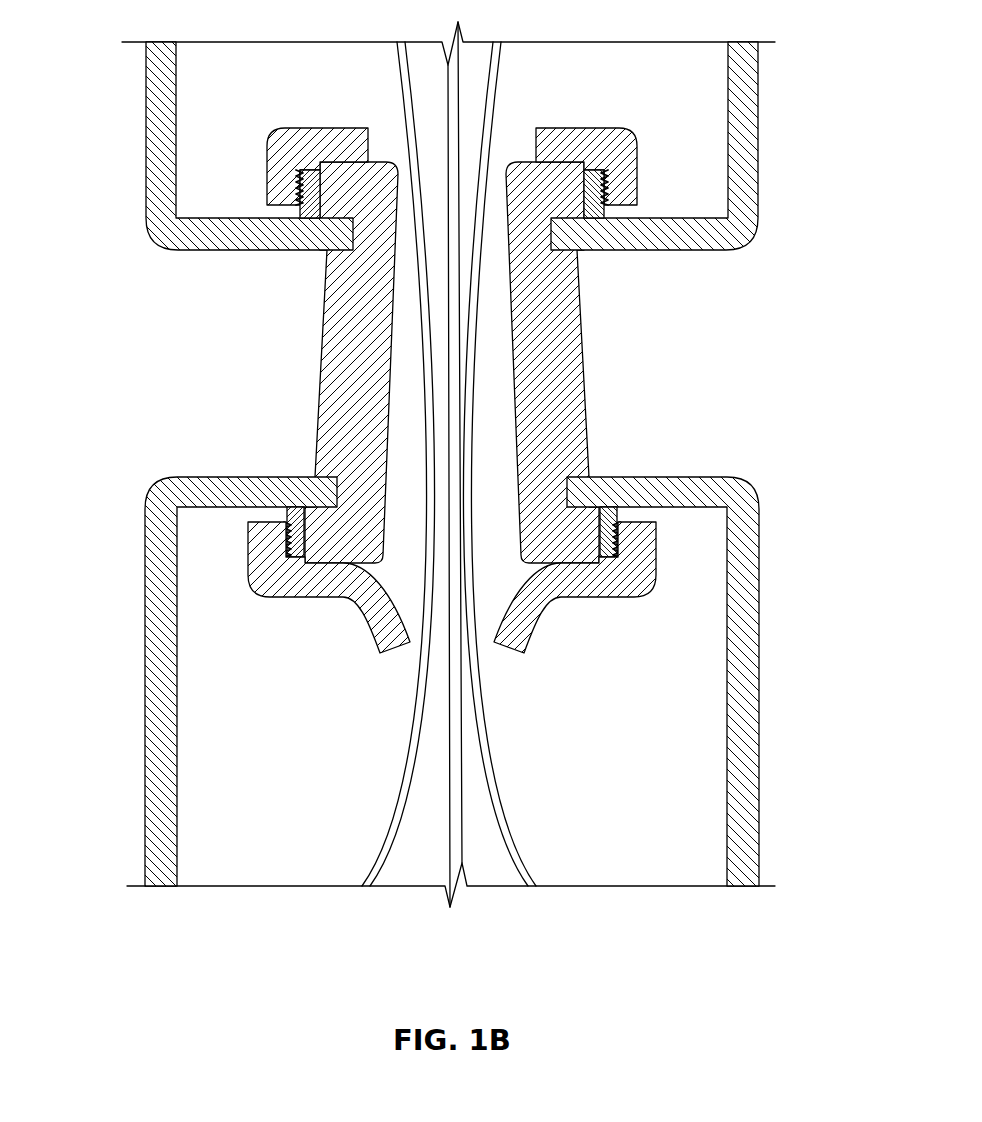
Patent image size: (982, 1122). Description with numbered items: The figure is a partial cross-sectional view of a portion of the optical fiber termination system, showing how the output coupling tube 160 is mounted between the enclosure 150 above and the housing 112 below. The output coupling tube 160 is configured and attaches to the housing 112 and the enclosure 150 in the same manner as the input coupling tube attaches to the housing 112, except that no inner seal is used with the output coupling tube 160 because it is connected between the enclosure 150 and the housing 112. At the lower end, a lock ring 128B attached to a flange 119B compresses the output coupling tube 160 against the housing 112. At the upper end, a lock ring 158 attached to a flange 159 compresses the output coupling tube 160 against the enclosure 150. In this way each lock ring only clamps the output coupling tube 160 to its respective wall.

The housing 112 is at (747, 646).
The enclosure 150 is at (746, 103).
The output coupling tube 160 is at (612, 358).
The lock ring 158 is at (278, 171).
The flange 159 is at (597, 200).
The flange 119B is at (616, 522).
The lock ring 128B is at (640, 549).